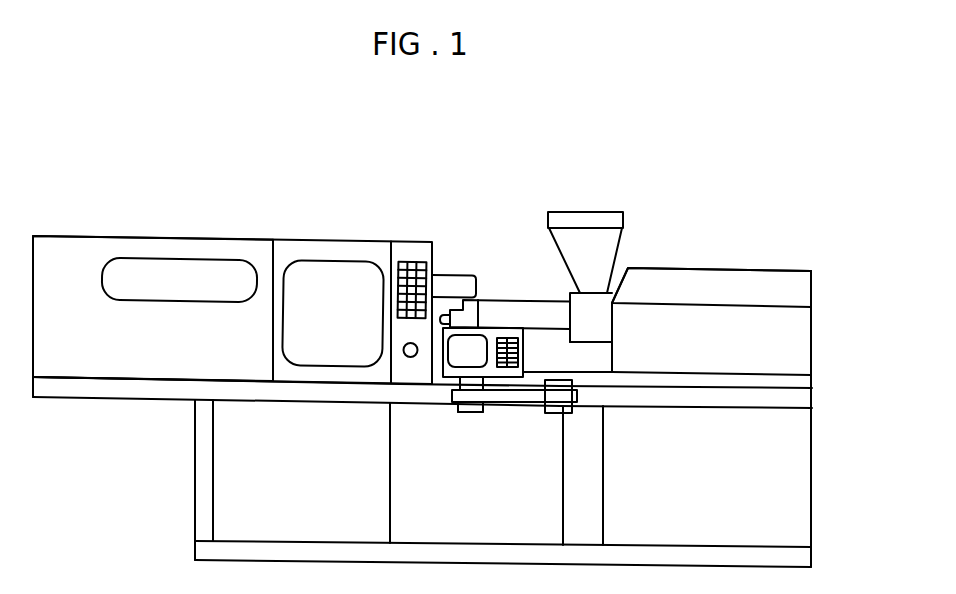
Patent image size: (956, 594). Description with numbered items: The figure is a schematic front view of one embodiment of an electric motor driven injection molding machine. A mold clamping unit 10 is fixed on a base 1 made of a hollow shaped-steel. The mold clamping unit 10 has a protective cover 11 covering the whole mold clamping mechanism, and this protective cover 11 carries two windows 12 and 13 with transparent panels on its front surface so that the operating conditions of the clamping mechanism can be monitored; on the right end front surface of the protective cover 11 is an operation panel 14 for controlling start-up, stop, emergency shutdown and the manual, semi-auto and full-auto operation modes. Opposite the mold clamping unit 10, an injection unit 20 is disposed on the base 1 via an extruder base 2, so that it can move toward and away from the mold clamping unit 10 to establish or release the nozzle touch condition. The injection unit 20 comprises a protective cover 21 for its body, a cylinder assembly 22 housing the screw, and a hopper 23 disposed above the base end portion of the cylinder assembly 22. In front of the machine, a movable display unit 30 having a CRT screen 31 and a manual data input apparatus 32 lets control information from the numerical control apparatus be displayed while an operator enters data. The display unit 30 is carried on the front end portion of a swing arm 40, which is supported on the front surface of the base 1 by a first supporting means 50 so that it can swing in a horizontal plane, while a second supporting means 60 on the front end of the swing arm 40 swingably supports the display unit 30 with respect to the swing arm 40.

The base 1 is at (149, 401).
The extruder base 2 is at (770, 380).
The mold clamping unit 10 is at (254, 240).
The protective cover 11 is at (218, 250).
The window 12 is at (142, 272).
The window 13 is at (318, 275).
The operation panel 14 is at (415, 262).
The injection unit 20 is at (632, 236).
The protective cover 21 is at (767, 282).
The cylinder assembly 22 is at (488, 307).
The hopper 23 is at (601, 218).
The movable display unit 30 is at (475, 323).
The CRT screen 31 is at (443, 405).
The manual data input apparatus 32 is at (514, 332).
The swing arm 40 is at (523, 408).
The first supporting means 50 is at (557, 415).
The second supporting means 60 is at (472, 413).